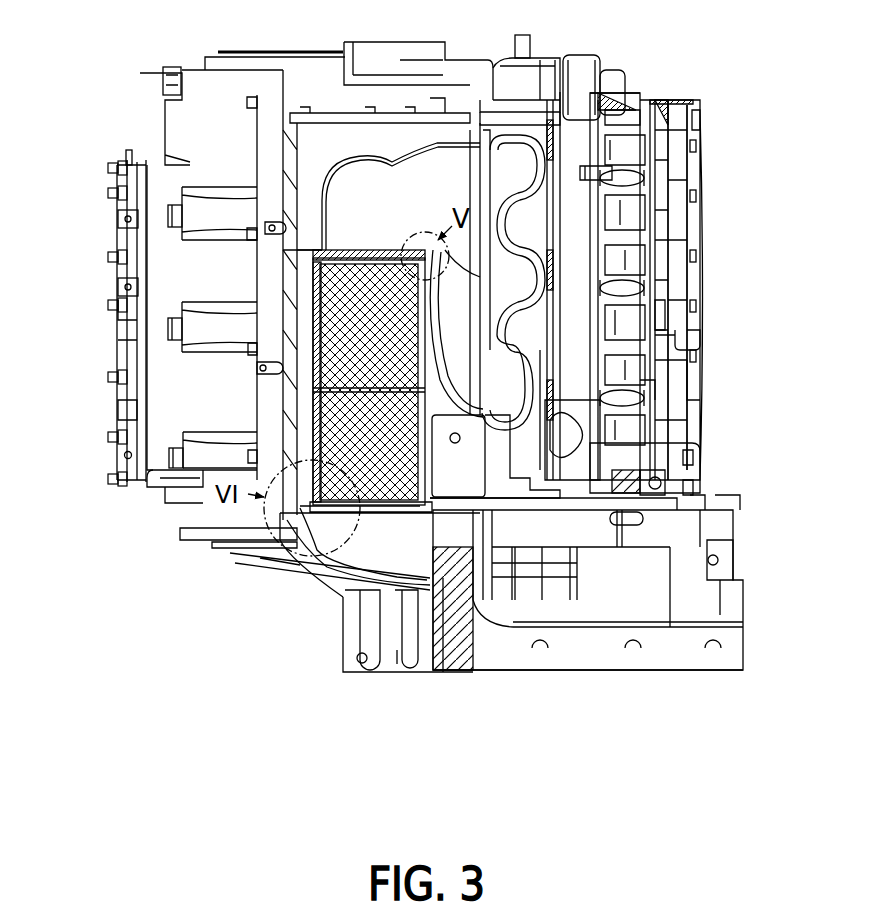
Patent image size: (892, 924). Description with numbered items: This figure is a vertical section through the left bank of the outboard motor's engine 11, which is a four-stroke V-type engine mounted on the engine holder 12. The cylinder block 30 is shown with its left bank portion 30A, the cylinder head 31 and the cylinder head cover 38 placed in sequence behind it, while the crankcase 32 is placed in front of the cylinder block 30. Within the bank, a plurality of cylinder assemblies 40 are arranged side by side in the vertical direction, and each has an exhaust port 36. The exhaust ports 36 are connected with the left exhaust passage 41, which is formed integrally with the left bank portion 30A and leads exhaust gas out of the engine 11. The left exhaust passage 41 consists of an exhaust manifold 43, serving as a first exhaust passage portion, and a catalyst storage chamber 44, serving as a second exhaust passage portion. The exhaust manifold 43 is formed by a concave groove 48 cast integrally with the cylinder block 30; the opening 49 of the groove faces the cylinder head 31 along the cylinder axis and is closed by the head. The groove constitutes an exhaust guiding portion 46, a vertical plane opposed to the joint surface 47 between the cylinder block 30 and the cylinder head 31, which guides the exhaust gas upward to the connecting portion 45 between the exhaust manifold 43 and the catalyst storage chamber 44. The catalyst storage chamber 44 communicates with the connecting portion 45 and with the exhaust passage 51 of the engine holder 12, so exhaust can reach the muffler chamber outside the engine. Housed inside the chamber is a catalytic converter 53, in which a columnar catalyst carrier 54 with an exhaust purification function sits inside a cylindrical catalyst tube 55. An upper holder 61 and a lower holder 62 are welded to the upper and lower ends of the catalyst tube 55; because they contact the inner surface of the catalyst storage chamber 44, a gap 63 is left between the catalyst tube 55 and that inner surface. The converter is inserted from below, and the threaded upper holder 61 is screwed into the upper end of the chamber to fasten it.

The engine 11 is at (735, 85).
The engine holder 12 is at (683, 578).
The cylinder block 30 is at (318, 85).
The left bank portion 30A is at (454, 65).
The cylinder head 31 is at (613, 113).
The crankcase 32 is at (215, 95).
The exhaust port 36 is at (620, 183).
The cylinder head cover 38 is at (678, 158).
The cylinder assembly 40 is at (650, 293).
The left exhaust passage 41 is at (398, 182).
The exhaust manifold 43 is at (443, 192).
The catalyst storage chamber 44 is at (297, 358).
The connecting portion 45 is at (342, 187).
The exhaust guiding portion 46 is at (470, 345).
The joint surface 47 is at (500, 243).
The concave groove 48 is at (630, 365).
The opening 49 is at (650, 318).
The exhaust passage 51 is at (390, 545).
The catalytic converter 53 is at (162, 325).
The catalyst carrier 54 is at (310, 447).
The catalyst tube 55 is at (313, 412).
The upper holder 61 is at (320, 250).
The lower holder 62 is at (263, 542).
The gap 63 is at (313, 388).